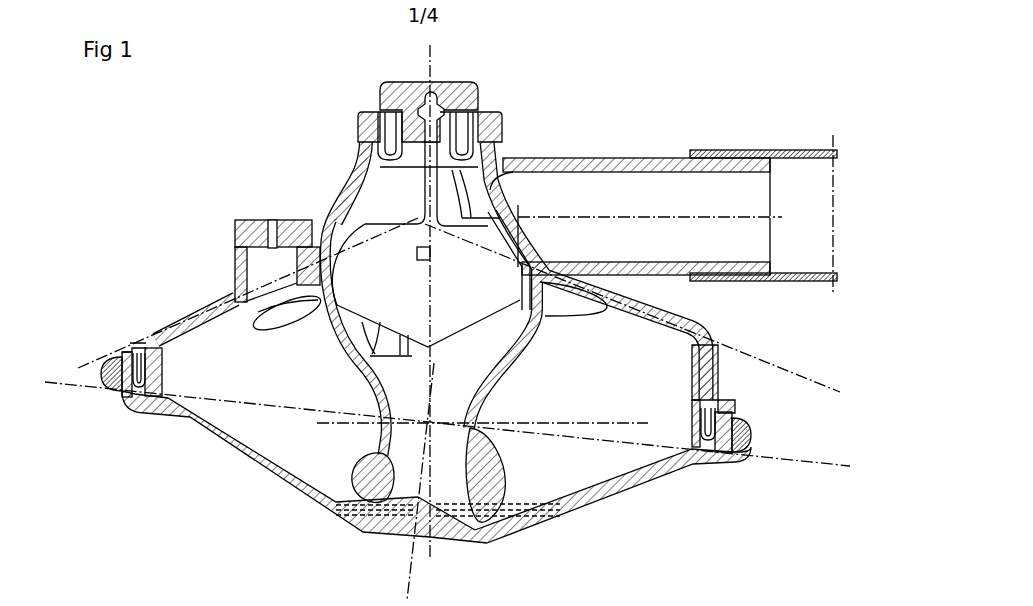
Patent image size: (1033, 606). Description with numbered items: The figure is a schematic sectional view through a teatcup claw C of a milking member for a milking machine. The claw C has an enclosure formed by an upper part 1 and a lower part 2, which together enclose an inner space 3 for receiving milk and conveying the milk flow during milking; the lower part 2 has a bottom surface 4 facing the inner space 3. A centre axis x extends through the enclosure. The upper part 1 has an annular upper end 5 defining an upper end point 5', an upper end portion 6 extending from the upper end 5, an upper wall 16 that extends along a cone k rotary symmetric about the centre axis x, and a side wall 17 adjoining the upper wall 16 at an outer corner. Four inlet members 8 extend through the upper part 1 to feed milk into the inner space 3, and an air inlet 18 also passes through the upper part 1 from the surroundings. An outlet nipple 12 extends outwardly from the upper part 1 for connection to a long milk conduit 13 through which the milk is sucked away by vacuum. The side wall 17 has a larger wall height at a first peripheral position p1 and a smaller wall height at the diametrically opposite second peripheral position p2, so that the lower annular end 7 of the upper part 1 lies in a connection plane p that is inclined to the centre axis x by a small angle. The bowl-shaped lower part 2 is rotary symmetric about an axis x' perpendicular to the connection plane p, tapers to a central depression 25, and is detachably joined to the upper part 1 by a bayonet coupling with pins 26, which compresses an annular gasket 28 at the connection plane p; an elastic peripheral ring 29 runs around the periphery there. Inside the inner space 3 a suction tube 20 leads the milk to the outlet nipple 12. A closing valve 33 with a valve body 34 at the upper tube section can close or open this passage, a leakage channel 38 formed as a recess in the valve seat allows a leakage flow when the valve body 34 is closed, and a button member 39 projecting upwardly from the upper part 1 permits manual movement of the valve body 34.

The upper part 1 is at (480, 363).
The lower part 2 is at (205, 437).
The inner space 3 is at (275, 398).
The bottom surface 4 is at (600, 482).
The upper end 5 is at (438, 91).
The upper end point 5' is at (353, 78).
The upper end portion 6 is at (401, 242).
The lower annular end 7 is at (708, 424).
The inlet member 8 is at (293, 312).
The outlet nipple 12 is at (590, 162).
The long milk conduit 13 is at (790, 153).
The upper wall 16 is at (596, 271).
The side wall 17 is at (710, 354).
The air inlet 18 is at (272, 222).
The suction tube 20 is at (378, 440).
The central depression 25 is at (442, 535).
The pin 26 is at (723, 432).
The annular gasket 28 is at (696, 423).
The peripheral ring 29 is at (752, 440).
The closing valve 33 is at (351, 182).
The valve body 34 is at (372, 237).
The leakage channel 38 is at (519, 208).
The button member 39 is at (468, 88).
The centre axis x is at (473, 288).
The axis of rotation x' is at (404, 481).
The connection plane p is at (72, 383).
The first peripheral position p1 is at (712, 398).
The second peripheral position p2 is at (155, 343).
The cone k is at (783, 372).
The claw C is at (127, 197).